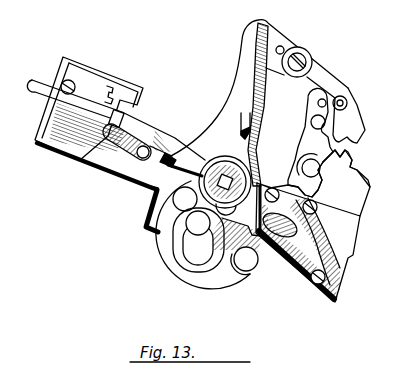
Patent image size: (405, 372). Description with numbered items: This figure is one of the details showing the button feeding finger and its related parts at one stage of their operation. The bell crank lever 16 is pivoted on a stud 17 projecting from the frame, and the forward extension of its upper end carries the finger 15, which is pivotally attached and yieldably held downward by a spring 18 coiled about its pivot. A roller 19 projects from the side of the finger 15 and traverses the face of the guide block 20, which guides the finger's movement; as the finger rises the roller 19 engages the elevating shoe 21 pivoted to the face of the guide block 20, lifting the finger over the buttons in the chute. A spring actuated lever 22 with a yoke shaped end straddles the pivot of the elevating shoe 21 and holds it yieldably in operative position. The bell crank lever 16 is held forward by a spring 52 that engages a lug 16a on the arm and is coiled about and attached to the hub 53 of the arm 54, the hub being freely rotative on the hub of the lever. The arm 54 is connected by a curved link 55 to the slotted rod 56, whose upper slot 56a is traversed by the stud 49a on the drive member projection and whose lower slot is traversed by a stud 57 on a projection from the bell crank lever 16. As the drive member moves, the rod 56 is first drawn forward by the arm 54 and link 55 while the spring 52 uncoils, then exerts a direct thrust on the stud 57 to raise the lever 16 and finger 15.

The finger 15 is at (337, 91).
The bell crank lever 16 is at (241, 77).
The lug 16a is at (250, 132).
The stud 17 is at (216, 158).
The spring 18 is at (304, 54).
The roller 19 is at (348, 104).
The guide block 20 is at (357, 198).
The elevating shoe 21 is at (338, 168).
The spring actuated lever 22 is at (309, 133).
The stud 49a is at (139, 157).
The spring 52 is at (226, 157).
The hub 53 is at (155, 207).
The arm 54 is at (263, 279).
The curved link 55 is at (186, 279).
The slotted rod 56 is at (156, 186).
The slot 56a is at (131, 143).
The stud 57 is at (148, 229).